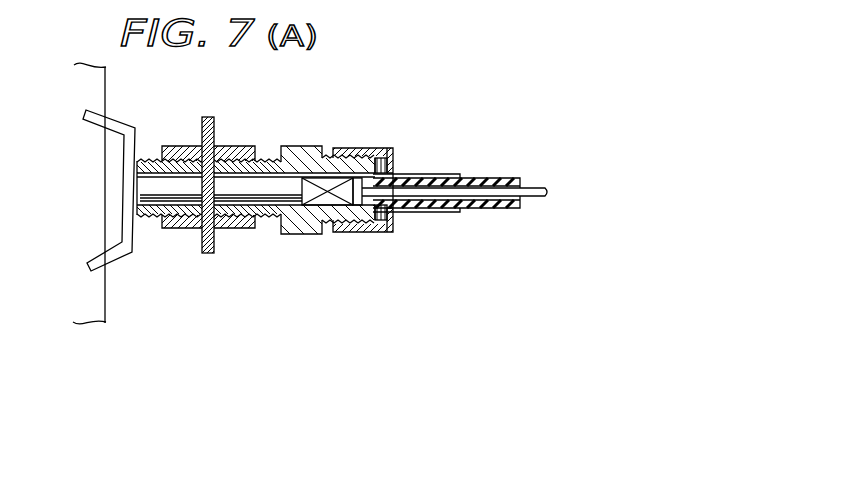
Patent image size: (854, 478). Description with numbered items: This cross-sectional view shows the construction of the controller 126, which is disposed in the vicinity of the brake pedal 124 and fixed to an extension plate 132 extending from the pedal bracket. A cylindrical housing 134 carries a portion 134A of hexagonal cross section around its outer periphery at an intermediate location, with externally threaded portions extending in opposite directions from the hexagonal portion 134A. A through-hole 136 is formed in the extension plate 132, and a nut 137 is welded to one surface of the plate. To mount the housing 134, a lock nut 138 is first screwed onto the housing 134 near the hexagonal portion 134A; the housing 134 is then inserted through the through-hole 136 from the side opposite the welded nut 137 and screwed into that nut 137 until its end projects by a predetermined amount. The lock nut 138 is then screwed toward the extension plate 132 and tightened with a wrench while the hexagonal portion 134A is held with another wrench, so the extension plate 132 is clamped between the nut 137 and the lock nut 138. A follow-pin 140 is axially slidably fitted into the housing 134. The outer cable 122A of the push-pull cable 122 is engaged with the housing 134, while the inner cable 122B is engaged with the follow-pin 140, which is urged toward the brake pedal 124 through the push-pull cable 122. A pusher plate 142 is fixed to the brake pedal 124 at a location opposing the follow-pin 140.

The push-pull cable 122 is at (489, 174).
The outer cable 122A is at (507, 209).
The inner cable 122B is at (538, 189).
The brake pedal 124 is at (105, 298).
The controller 126 is at (379, 145).
The extension plate 132 is at (238, 93).
The cylindrical housing 134 is at (320, 239).
The hexagonal portion 134A is at (293, 237).
The through-hole 136 is at (210, 162).
The nut 137 is at (173, 150).
The lock nut 138 is at (237, 232).
The follow-pin 140 is at (160, 187).
The pusher plate 142 is at (127, 222).